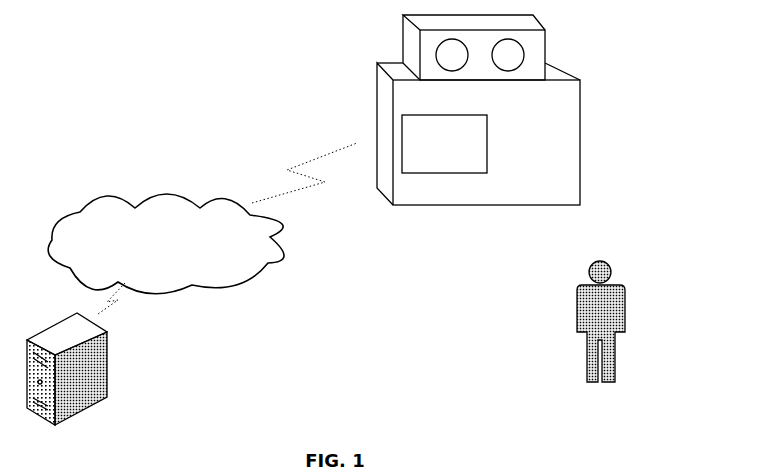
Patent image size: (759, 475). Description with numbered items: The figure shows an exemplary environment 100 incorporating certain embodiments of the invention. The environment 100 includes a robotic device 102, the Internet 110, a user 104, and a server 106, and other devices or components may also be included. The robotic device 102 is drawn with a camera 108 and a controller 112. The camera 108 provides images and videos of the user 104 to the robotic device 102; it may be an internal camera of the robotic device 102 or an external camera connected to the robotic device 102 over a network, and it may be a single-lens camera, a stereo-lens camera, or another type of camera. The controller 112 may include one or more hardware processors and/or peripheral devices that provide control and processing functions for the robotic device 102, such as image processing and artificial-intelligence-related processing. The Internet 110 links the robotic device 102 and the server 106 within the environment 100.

The environment 100 is at (242, 52).
The robotic device 102 is at (582, 165).
The user 104 is at (613, 372).
The server 106 is at (104, 368).
The camera 108 is at (545, 55).
The Internet 110 is at (223, 253).
The controller 112 is at (457, 142).